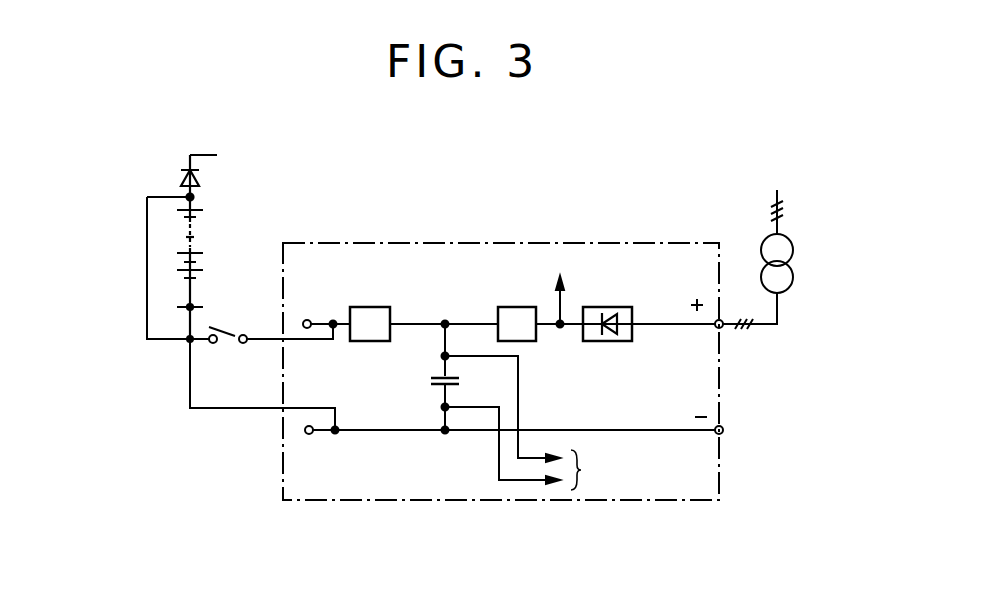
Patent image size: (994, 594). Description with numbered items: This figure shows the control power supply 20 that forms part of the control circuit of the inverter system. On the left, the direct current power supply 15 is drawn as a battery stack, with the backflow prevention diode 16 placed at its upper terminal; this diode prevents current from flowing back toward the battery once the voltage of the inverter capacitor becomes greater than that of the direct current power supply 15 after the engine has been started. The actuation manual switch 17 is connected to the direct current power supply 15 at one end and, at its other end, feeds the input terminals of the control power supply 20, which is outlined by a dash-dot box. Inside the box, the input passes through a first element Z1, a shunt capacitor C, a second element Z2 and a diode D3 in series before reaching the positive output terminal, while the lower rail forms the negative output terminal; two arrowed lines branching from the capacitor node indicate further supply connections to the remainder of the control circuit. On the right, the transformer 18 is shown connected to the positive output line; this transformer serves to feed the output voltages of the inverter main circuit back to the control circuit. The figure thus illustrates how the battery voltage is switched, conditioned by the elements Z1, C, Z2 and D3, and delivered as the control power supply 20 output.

The direct current power supply 15 is at (197, 237).
The backflow prevention diode 16 is at (205, 183).
The actuation manual switch 17 is at (229, 327).
The transformer 18 is at (794, 248).
The control power supply 20 is at (563, 244).
The impedance element Z1 is at (368, 307).
The impedance element Z2 is at (510, 307).
The diode D3 is at (606, 307).
The capacitor C is at (432, 381).